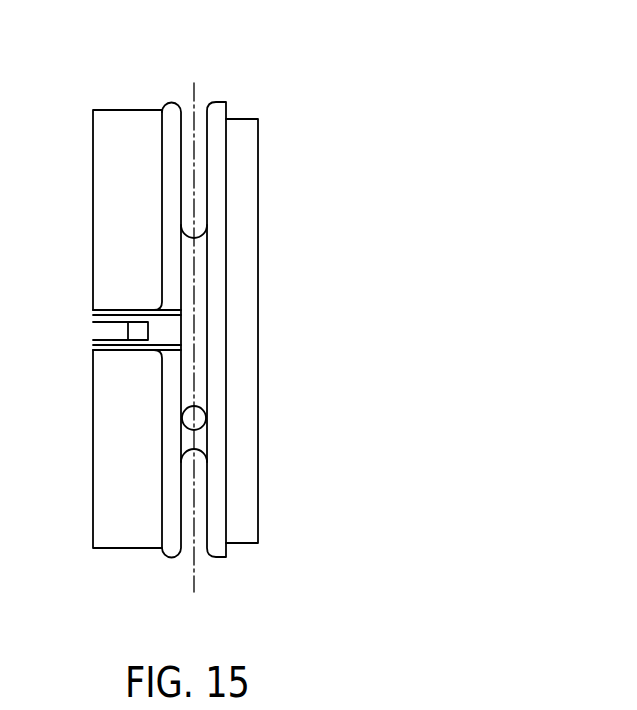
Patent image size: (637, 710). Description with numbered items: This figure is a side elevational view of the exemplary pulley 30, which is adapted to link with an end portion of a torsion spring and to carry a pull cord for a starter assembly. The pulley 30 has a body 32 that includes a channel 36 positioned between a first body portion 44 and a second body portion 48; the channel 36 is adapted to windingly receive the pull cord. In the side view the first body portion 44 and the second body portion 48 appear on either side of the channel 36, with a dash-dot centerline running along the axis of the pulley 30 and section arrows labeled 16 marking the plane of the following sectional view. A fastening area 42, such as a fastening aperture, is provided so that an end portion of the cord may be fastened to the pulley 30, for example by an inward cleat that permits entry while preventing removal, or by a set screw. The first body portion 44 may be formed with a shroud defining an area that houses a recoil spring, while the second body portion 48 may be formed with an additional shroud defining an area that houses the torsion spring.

The section line 16- 16 is at (194, 83).
The pulley 30 is at (277, 326).
The body 32 is at (299, 331).
The channel 36 is at (168, 436).
The fastening area 42 is at (164, 425).
The first body portion 44 is at (237, 348).
The second body portion 48 is at (118, 276).